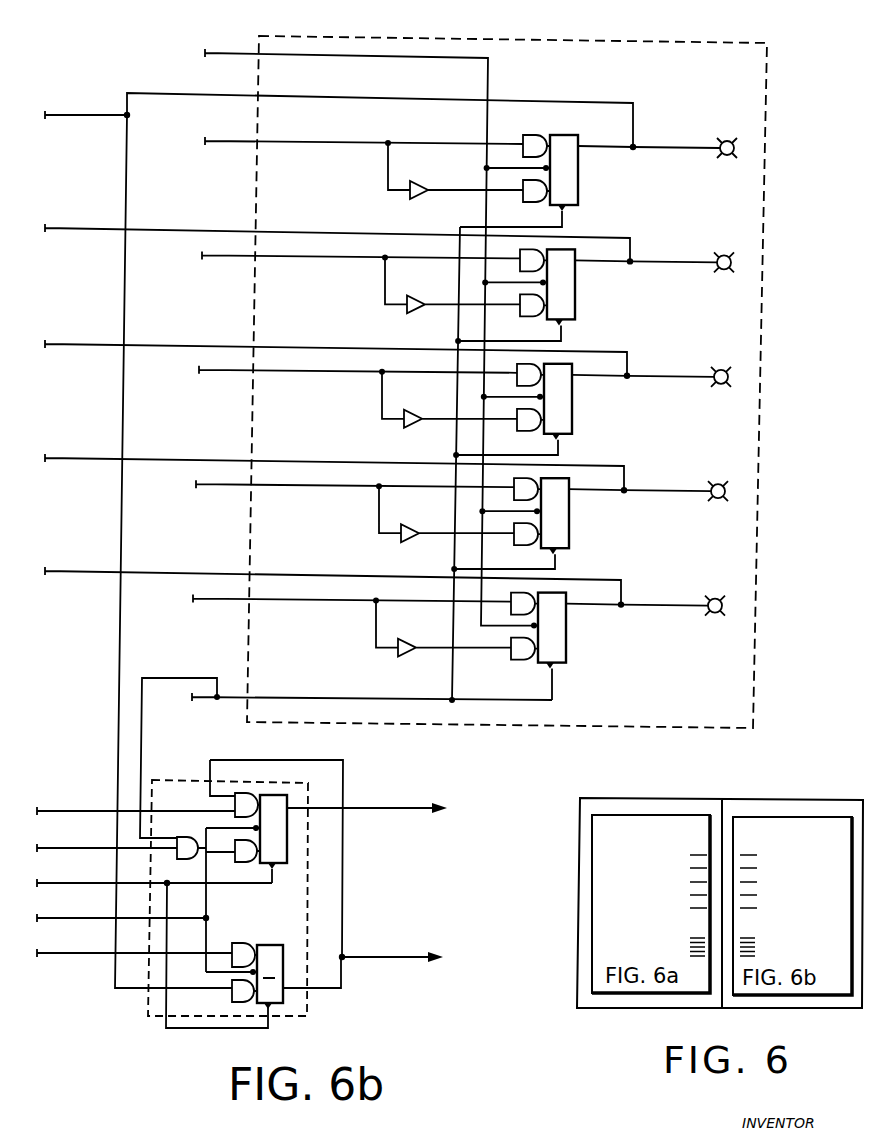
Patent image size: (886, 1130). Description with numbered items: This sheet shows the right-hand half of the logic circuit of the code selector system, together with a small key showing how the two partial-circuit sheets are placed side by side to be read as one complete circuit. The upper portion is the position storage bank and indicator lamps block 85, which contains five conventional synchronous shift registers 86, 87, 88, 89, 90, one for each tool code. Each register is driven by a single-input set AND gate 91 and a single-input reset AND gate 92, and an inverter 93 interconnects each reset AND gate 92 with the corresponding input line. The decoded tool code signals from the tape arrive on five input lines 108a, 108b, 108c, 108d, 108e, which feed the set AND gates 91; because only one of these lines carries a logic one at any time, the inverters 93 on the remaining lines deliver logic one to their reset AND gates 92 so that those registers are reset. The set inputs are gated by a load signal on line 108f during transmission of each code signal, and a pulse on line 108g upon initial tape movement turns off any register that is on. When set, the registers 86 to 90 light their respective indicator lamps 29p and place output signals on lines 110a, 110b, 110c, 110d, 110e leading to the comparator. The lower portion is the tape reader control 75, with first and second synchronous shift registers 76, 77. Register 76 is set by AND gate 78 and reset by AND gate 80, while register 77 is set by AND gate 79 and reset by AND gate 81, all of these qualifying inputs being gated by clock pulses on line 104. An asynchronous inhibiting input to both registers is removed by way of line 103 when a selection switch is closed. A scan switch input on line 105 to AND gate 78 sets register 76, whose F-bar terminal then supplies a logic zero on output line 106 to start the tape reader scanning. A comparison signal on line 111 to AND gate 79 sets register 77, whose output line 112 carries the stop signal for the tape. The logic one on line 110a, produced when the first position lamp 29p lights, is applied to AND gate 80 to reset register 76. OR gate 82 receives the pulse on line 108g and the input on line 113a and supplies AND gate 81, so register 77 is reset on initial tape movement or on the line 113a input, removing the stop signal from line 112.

The position storage bank and indicator lamps block 85 is at (767, 118).
The synchronous shift register 86 is at (578, 168).
The synchronous shift register 87 is at (628, 287).
The synchronous shift register 88 is at (625, 402).
The synchronous shift register 89 is at (622, 516).
The synchronous shift register 90 is at (619, 631).
The set AND gate 91 is at (528, 134).
The reset AND gate 92 is at (528, 203).
The inverter 93 is at (413, 199).
The indicator lamp 29p is at (724, 156).
The input line 108a is at (246, 142).
The input line 108b is at (355, 278).
The input line 108c is at (352, 393).
The input line 108d is at (349, 507).
The input line 108e is at (346, 622).
The load signal line 108f is at (246, 54).
The pulse signal line 108g is at (240, 699).
The output line 110a is at (90, 115).
The output line 110b is at (90, 228).
The output line 110c is at (90, 344).
The output line 110d is at (90, 458).
The output line 110e is at (90, 571).
The tape reader control 75 is at (148, 1022).
The first synchronous shift register 76 is at (283, 993).
The second synchronous shift register 77 is at (287, 838).
The AND gate 78 is at (232, 943).
The AND gate 79 is at (238, 793).
The AND gate 80 is at (232, 1003).
The AND gate 81 is at (240, 863).
The OR gate 82 is at (196, 838).
The line 103 is at (75, 884).
The clock pulse line 104 is at (75, 918).
The line 105 is at (75, 953).
The output line 106 is at (210, 760).
The line 111 is at (66, 812).
The output line 112 is at (396, 808).
The line 113a is at (87, 848).